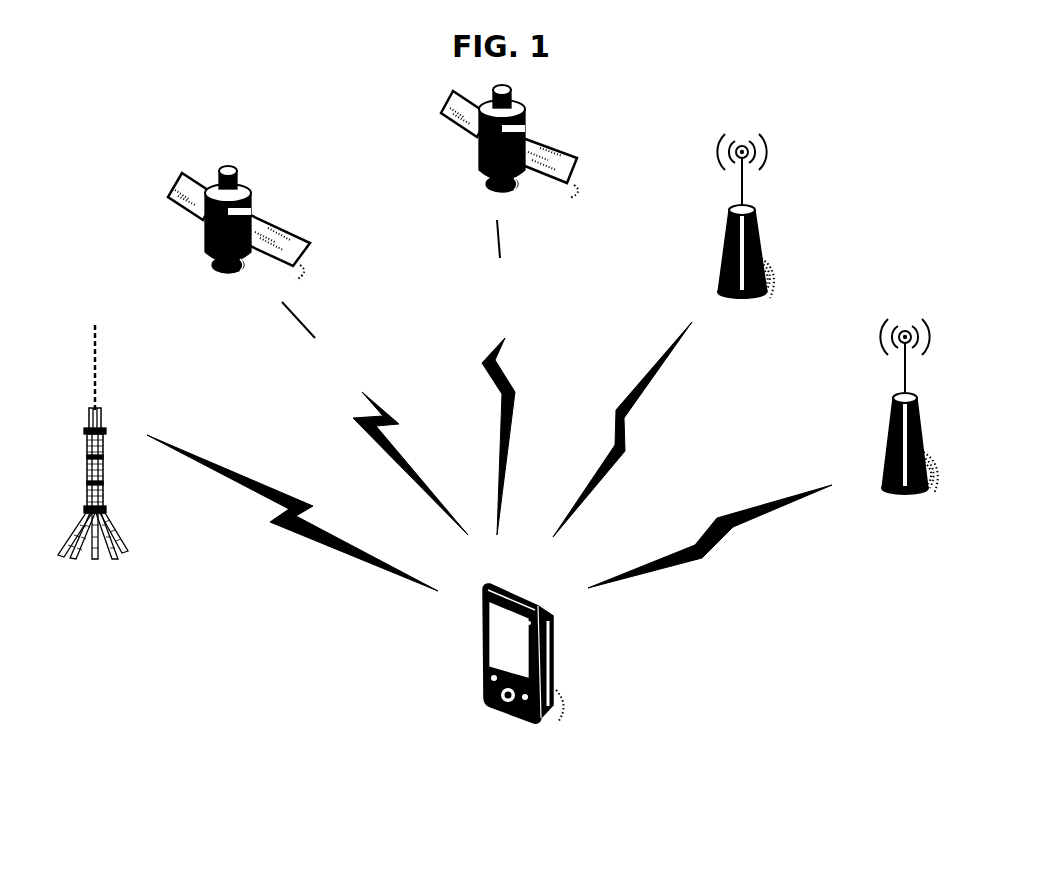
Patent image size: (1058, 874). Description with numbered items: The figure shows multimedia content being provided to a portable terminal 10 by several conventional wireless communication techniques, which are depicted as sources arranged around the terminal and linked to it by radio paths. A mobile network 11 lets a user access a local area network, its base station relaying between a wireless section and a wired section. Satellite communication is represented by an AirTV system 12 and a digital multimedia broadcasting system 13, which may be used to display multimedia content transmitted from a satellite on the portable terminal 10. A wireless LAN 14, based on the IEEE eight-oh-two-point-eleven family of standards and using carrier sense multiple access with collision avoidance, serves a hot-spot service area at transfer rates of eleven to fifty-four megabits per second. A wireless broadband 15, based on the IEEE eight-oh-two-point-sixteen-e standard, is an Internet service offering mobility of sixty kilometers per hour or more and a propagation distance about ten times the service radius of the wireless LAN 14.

The portable terminal 10 is at (515, 727).
The mobile network 11 is at (281, 594).
The AirTV system 12 is at (328, 345).
The digital multimedia broadcasting (DMB) system 13 is at (566, 268).
The wireless LAN 14 is at (766, 360).
The wireless broadband 15 is at (831, 589).